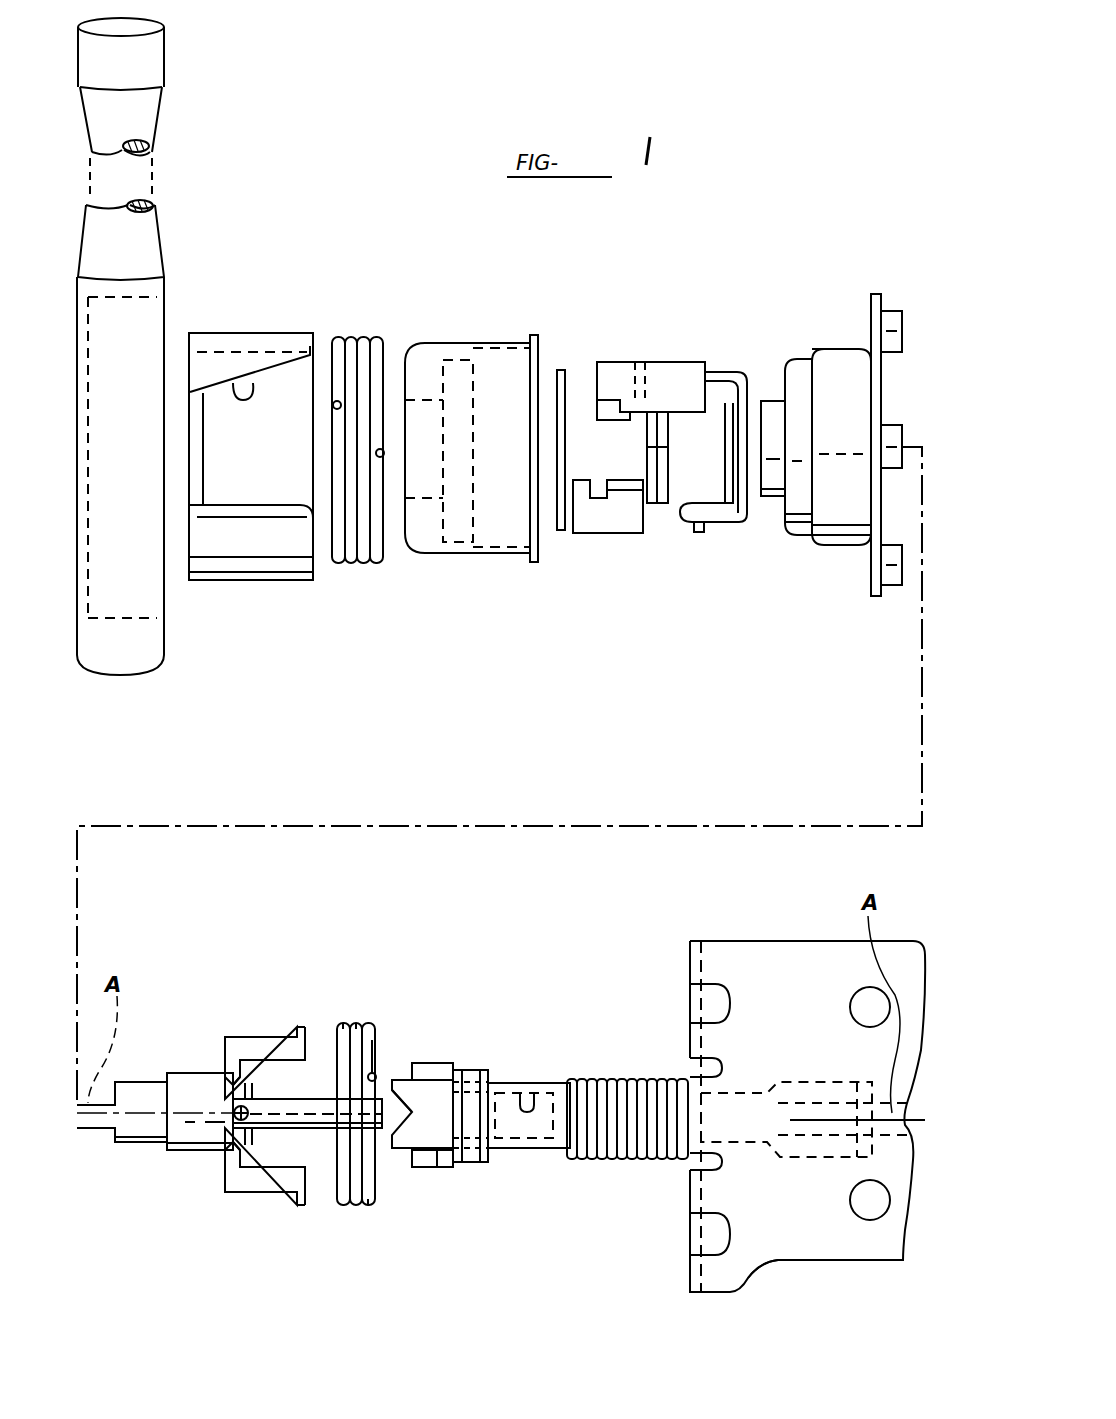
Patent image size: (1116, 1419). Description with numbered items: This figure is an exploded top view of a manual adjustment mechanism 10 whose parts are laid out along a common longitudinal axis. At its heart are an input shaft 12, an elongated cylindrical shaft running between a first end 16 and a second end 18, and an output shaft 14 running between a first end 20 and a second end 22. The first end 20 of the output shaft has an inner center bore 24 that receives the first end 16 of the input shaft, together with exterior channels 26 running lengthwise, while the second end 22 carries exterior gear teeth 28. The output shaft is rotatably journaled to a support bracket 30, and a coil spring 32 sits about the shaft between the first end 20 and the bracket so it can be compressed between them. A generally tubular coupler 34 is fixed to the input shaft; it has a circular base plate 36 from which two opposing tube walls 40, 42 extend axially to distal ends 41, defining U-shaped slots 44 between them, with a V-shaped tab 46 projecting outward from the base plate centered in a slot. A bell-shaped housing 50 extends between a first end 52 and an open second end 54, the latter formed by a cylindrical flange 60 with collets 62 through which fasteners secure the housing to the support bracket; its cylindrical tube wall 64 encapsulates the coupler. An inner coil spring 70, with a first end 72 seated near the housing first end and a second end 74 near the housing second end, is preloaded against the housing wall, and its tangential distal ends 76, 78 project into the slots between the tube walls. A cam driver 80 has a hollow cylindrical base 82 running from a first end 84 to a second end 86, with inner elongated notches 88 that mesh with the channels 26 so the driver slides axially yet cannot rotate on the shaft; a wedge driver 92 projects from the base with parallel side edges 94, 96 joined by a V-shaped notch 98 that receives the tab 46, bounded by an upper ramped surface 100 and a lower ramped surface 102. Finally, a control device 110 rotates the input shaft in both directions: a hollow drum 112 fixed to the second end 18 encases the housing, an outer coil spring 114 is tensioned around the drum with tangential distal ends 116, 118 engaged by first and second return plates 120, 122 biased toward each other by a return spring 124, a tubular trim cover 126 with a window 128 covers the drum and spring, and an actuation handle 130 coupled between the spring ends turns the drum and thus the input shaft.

The manual adjustment mechanism 10 is at (712, 180).
The input shaft 12 is at (321, 1085).
The output shaft 14 is at (750, 1082).
The first end 16 is at (434, 1095).
The second end 18 is at (110, 1128).
The first end 20 is at (490, 1160).
The second end 22 is at (879, 1152).
The inner center bore 24 is at (532, 1105).
The exterior channels 26 is at (544, 1148).
The exterior gear teeth 28 is at (800, 1158).
The support bracket 30 is at (755, 1278).
The coil spring 32 is at (639, 1079).
The coupler 34 is at (221, 1121).
The base plate 36 is at (198, 1143).
The tube wall 40 is at (250, 1192).
The distal ends 41 is at (258, 1037).
The tube wall 42 is at (242, 1037).
The U-shaped slots 44 is at (279, 1167).
The V-shaped tab 46 is at (233, 1107).
The housing 50 is at (845, 330).
The first end 52 is at (774, 401).
The second end 54 is at (878, 299).
The cylindrical flange 60 is at (876, 567).
The collets 62 is at (903, 571).
The tube wall 64 is at (831, 524).
The inner coil spring 70 is at (356, 1024).
The first end 72 is at (343, 1024).
The second end 74 is at (368, 1194).
The first distal end 76 is at (319, 1148).
The second distal end 78 is at (372, 1070).
The cam driver 80 is at (460, 1178).
The hollow cylindrical base 82 is at (440, 1083).
The first end 84 is at (425, 1063).
The second end 86 is at (490, 1072).
The elongated notches 88 is at (469, 1063).
The wedge driver 92 is at (442, 1139).
The side edge 94 is at (429, 1167).
The side edge 96 is at (432, 1078).
The V-shaped notch 98 is at (386, 1130).
The upper ramped surface 100 is at (437, 1167).
The lower ramped surface 102 is at (464, 1070).
The control device 110 is at (427, 283).
The drum 112 is at (495, 343).
The outer coil spring 114 is at (360, 568).
The distal end 116 is at (337, 401).
The distal end 118 is at (380, 457).
The first return plate 120 is at (604, 534).
The second return plate 122 is at (643, 363).
The return spring 124 is at (745, 500).
The tubular trim cover 126 is at (247, 583).
The window 128 is at (253, 383).
The actuation handle 130 is at (73, 628).